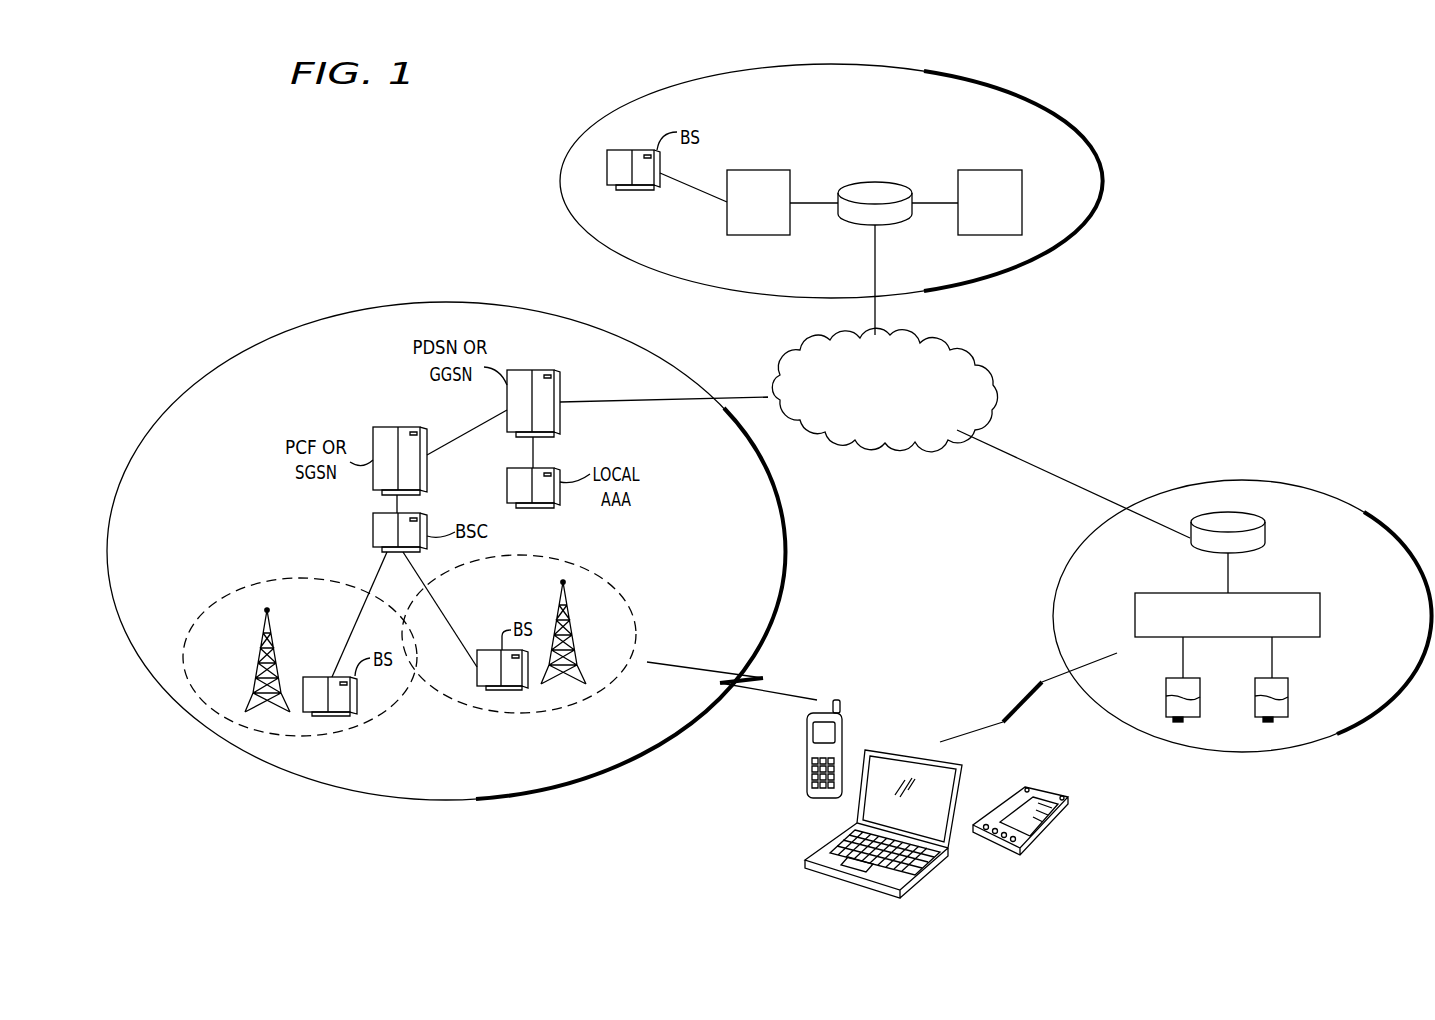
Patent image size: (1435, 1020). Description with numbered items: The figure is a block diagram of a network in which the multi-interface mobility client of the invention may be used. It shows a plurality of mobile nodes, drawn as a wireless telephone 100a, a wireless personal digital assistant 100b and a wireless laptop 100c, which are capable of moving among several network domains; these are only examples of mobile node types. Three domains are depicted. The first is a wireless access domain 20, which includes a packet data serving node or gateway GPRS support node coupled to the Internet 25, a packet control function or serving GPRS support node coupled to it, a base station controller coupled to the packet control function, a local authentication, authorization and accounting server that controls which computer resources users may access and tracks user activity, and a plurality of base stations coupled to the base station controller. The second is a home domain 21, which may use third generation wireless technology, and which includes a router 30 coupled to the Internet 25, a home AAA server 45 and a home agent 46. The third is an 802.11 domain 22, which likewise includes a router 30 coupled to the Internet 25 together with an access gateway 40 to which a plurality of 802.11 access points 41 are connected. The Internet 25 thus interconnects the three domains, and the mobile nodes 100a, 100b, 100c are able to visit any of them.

The domain 20 is at (226, 362).
The home domain 21 is at (979, 84).
The 802.11 domain 22 is at (1293, 483).
The Internet 25 is at (937, 356).
The router 30 is at (870, 188).
The access gateway 40 is at (1320, 617).
The 802.11 access points 41 is at (1240, 668).
The home AAA server 45 is at (750, 170).
The home agent 46 is at (987, 170).
The wireless telephone 100a is at (805, 770).
The wireless personal digital assistant 100b is at (1048, 823).
The wireless laptop 100c is at (805, 861).